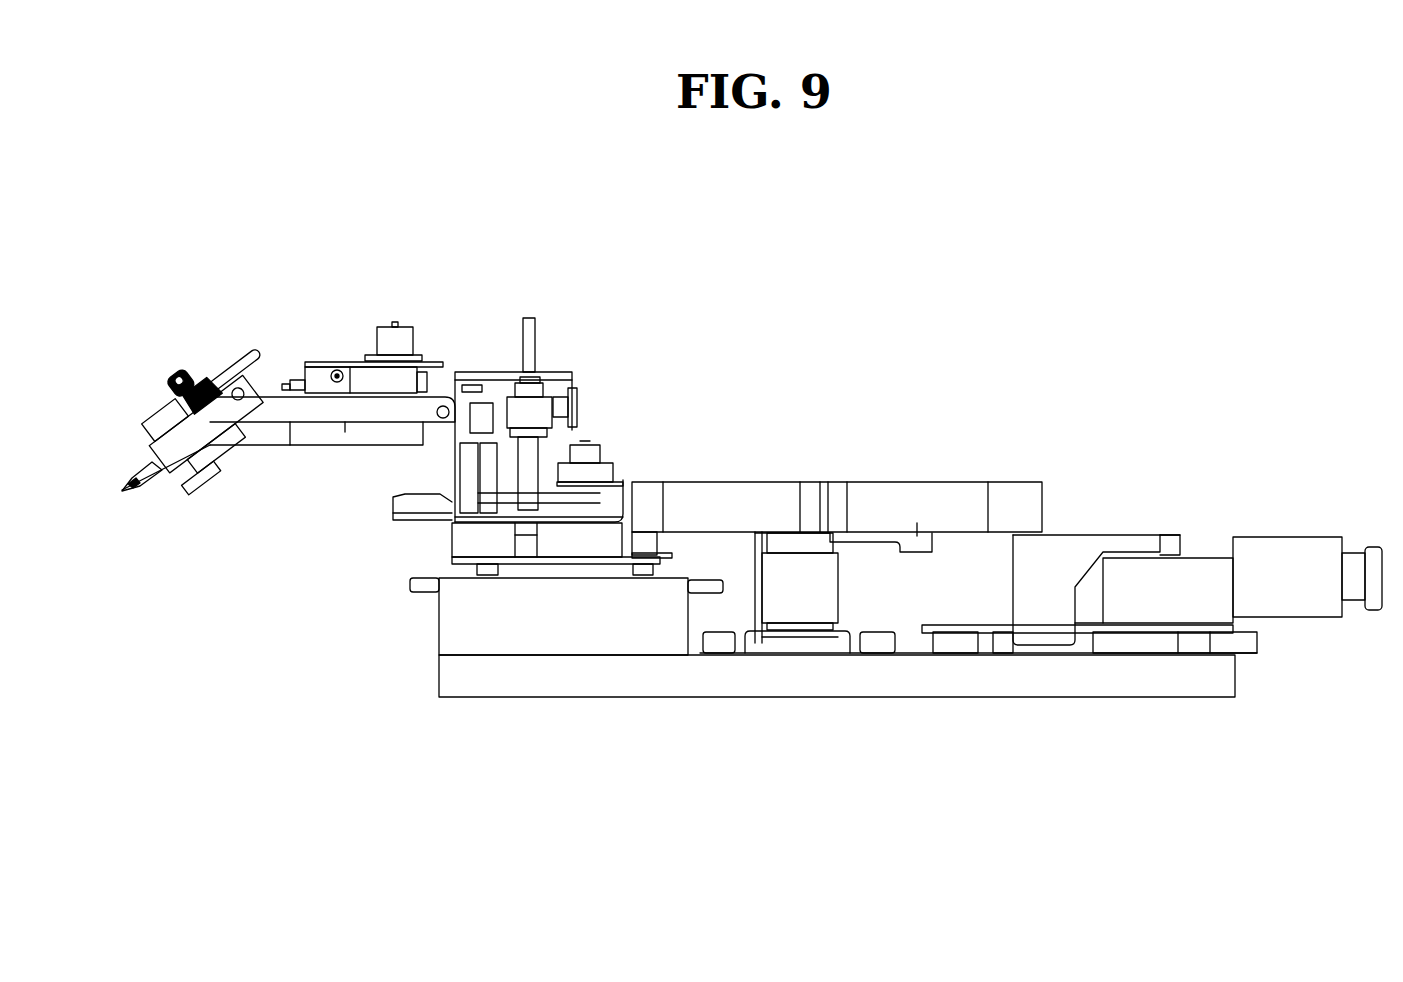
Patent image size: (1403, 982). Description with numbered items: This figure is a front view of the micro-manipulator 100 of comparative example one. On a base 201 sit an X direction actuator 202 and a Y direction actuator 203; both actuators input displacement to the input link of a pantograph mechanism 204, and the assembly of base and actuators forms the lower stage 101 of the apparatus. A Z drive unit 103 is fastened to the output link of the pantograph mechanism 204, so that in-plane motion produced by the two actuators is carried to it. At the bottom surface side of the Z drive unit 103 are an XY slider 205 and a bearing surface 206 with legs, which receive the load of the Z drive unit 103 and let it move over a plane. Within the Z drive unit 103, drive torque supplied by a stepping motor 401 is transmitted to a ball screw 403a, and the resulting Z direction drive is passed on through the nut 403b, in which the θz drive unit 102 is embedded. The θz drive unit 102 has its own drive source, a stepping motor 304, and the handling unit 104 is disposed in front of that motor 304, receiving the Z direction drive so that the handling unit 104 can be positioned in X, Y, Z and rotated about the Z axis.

The micro-manipulator 100 is at (858, 323).
The stage unit 101 is at (1085, 445).
The θz drive unit 102 is at (350, 332).
The Z drive unit 103 is at (562, 337).
The handling unit 104 is at (138, 388).
The base 201 is at (1022, 694).
The X direction actuator 202 is at (1288, 550).
The Y direction actuator 203 is at (787, 600).
The pantograph mechanism 204 is at (890, 467).
The XY slider 205 is at (453, 550).
The bearing surface 206 is at (408, 572).
The stepping motor 304 is at (413, 328).
The stepping motor 401 is at (603, 448).
The ball screw 403a is at (533, 452).
The nut 403b is at (550, 393).